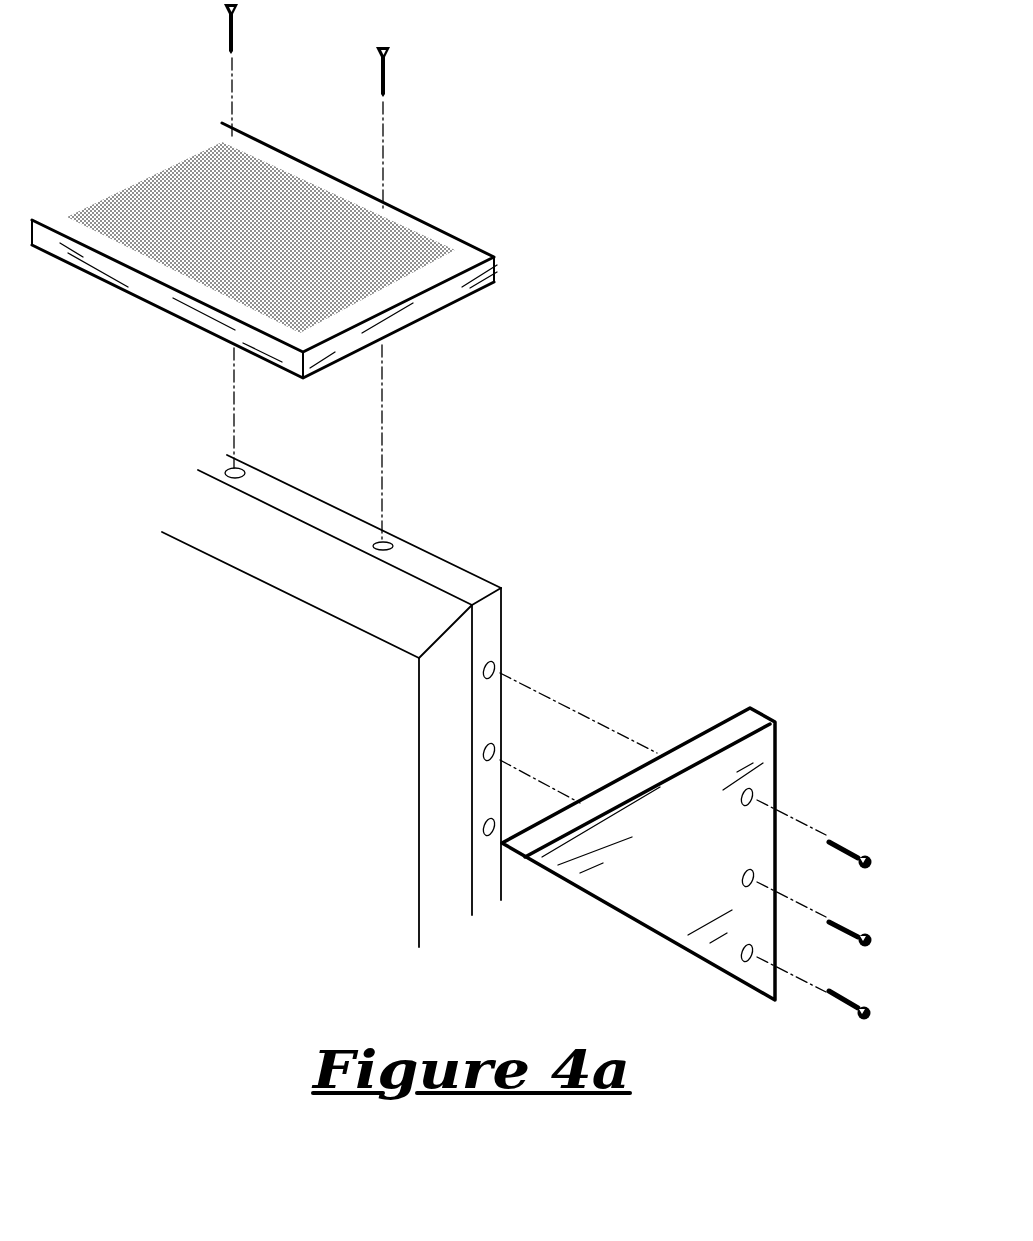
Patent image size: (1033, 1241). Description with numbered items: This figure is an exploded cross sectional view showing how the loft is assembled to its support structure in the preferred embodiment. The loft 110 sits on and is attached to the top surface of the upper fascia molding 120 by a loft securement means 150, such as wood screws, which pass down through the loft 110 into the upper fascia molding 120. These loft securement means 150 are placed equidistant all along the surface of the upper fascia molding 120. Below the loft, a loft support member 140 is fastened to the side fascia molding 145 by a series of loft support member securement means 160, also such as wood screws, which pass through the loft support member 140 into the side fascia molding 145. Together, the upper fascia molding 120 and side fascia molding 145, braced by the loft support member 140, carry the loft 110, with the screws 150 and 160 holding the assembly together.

The loft 110 is at (465, 235).
The upper fascia molding 120 is at (330, 517).
The loft support member 140 is at (730, 725).
The side fascia molding 145 is at (445, 693).
The loft securement means 150 is at (227, 30).
The loft support member securement means 160 is at (867, 1008).